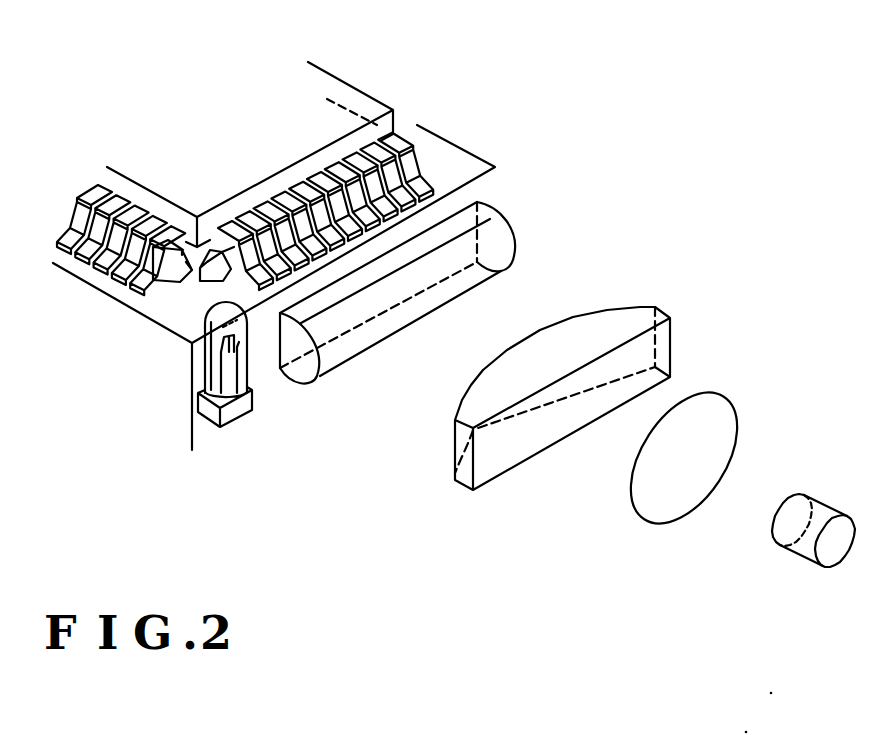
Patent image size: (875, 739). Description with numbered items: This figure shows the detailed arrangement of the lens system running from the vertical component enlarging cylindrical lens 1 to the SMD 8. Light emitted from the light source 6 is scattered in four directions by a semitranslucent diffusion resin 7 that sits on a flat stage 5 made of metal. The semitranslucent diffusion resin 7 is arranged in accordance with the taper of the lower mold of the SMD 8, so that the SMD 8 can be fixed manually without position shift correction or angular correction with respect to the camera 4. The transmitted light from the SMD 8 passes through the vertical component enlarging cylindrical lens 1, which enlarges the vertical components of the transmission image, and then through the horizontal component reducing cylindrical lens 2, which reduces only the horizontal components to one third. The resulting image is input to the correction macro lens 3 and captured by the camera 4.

The vertical component enlarging cylindrical lens 1 is at (513, 247).
The horizontal component reducing cylindrical lens 2 is at (623, 307).
The correction macro lens 3 is at (728, 400).
The camera 4 is at (828, 503).
The flat stage 5 is at (457, 165).
The light source 6 is at (213, 362).
The semitranslucent diffusion resin 7 is at (173, 268).
The SMD 8 is at (318, 120).